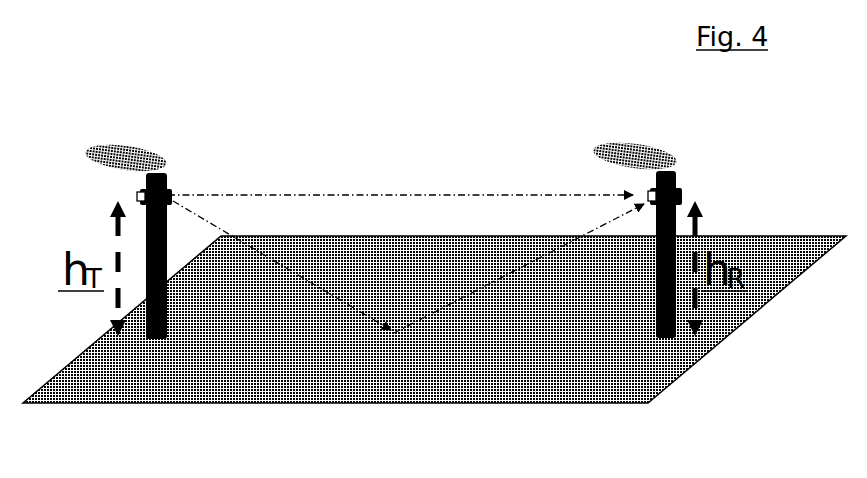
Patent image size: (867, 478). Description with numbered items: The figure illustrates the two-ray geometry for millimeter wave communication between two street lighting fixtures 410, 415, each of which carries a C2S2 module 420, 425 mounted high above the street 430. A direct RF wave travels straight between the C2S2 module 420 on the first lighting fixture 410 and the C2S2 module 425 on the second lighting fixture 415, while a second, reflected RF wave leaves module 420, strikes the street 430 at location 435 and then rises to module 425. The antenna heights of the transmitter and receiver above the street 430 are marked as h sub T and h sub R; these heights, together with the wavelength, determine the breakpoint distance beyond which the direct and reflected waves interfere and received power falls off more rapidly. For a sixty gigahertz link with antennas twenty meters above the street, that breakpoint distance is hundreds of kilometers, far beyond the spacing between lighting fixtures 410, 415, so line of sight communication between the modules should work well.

The lighting fixture 410 is at (138, 124).
The lighting fixture 415 is at (643, 121).
The C2S2 module 420 is at (129, 190).
The C2S2 module 425 is at (674, 190).
The street 430 is at (205, 396).
The reflection location 435 is at (386, 340).